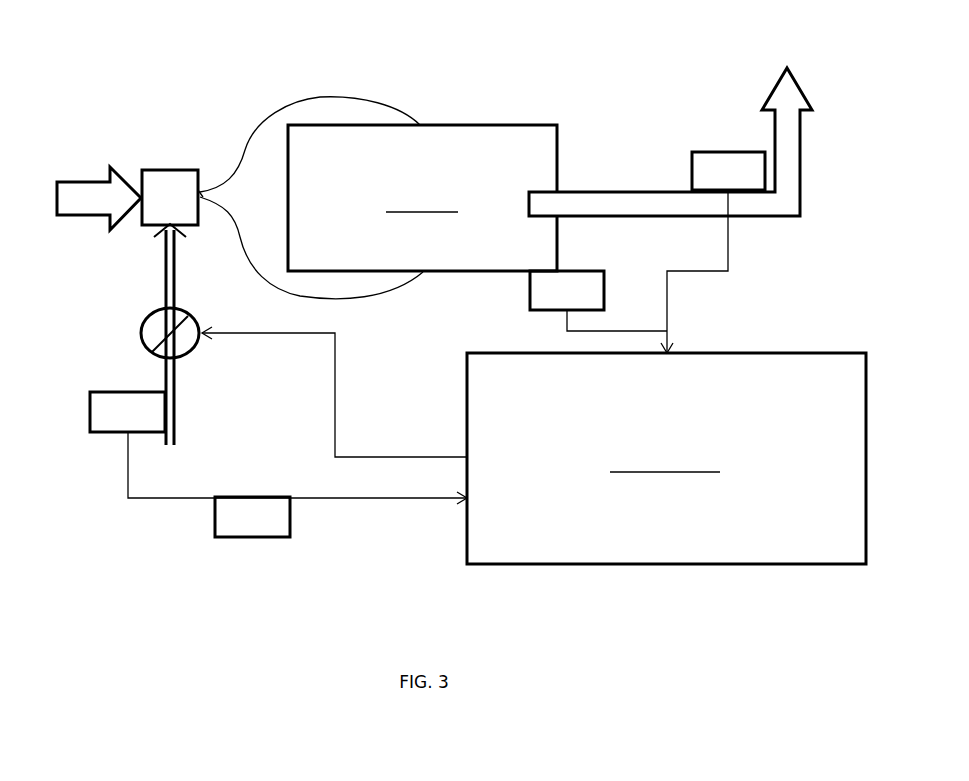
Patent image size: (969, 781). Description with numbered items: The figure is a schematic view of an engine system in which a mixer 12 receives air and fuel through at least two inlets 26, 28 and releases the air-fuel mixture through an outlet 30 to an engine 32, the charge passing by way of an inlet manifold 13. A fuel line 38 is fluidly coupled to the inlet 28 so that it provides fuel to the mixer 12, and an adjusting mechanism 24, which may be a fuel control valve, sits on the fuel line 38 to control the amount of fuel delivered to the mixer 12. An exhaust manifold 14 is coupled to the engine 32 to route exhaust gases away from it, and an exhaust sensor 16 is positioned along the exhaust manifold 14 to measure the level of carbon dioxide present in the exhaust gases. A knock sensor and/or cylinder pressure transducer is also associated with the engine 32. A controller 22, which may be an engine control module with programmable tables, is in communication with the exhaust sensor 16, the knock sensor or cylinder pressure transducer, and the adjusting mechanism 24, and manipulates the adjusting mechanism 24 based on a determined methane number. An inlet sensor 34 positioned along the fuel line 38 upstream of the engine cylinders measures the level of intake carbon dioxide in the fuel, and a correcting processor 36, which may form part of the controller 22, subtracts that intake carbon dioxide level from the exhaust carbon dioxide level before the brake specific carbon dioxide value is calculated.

The mixer 12 is at (167, 170).
The inlet manifold 13 is at (310, 98).
The exhaust manifold 14 is at (803, 177).
The exhaust sensor 16 is at (722, 152).
The controller 22 is at (867, 432).
The adjusting mechanism 24 is at (141, 333).
The inlet 26 is at (141, 195).
The inlet 28 is at (156, 235).
The outlet 30 is at (201, 195).
The engine 32 is at (530, 124).
The inlet sensor 34 is at (90, 412).
The correcting processor 36 is at (237, 538).
The fuel line 38 is at (165, 298).